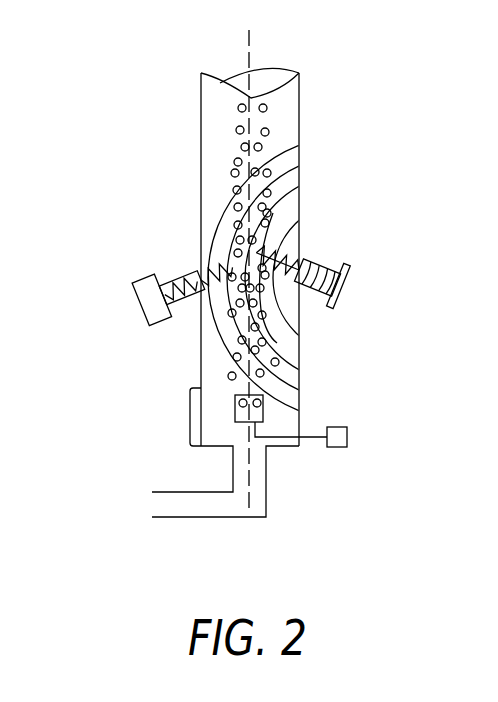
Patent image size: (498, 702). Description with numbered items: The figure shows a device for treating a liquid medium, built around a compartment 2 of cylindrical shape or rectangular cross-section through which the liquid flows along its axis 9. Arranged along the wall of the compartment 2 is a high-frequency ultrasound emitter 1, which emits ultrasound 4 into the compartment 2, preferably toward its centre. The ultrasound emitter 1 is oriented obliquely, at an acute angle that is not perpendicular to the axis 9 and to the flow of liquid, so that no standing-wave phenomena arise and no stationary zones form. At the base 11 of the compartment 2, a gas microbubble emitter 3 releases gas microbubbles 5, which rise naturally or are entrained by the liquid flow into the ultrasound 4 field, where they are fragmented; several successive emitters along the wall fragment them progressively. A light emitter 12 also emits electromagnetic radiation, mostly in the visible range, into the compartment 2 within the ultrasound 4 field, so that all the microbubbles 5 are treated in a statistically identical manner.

The high-frequency ultrasound emitter 1 is at (343, 291).
The compartment 2 is at (162, 166).
The gas microbubble emitter 3 is at (263, 413).
The ultrasound 4 is at (273, 162).
The gas microbubbles 5 is at (257, 342).
The axis of the compartment 9 is at (256, 52).
The base of the compartment 11 is at (190, 416).
The light emitter 12 is at (152, 317).